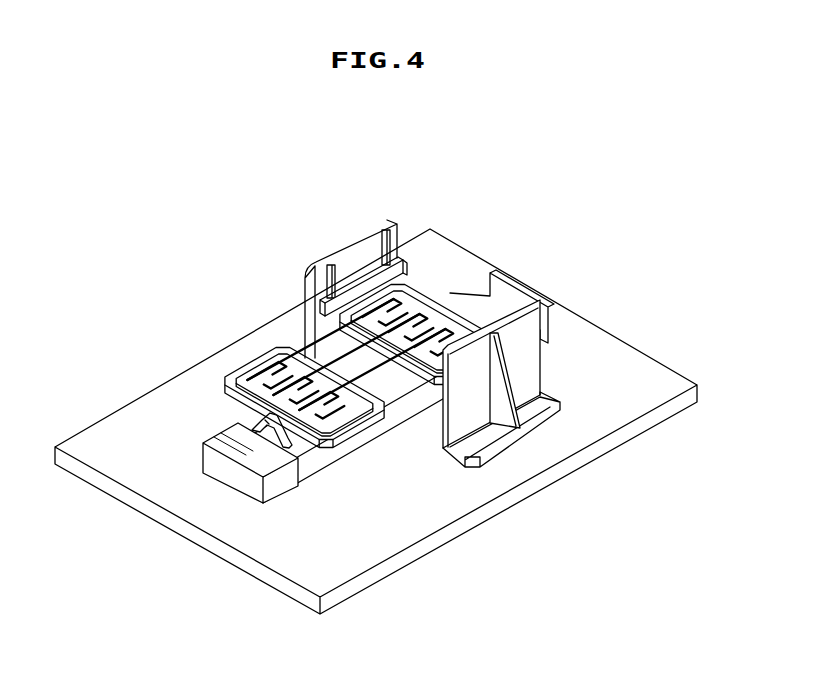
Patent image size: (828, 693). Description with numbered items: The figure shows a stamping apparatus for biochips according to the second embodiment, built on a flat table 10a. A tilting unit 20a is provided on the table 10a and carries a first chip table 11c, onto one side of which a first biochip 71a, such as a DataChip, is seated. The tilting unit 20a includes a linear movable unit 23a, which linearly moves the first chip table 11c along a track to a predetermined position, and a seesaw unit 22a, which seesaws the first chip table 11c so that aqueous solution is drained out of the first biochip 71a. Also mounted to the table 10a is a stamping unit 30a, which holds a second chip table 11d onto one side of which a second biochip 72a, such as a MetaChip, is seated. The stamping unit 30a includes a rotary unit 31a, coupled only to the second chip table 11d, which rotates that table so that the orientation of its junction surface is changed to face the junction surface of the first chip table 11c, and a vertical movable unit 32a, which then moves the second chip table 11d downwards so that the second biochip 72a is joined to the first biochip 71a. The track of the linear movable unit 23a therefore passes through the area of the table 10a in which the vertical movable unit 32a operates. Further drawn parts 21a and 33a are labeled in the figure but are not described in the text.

The table 10a is at (493, 525).
The tilting unit 20a is at (277, 416).
The hook 21a is at (260, 412).
The seesaw unit 22a is at (300, 445).
The linear movable unit 23a is at (282, 483).
The first chip table 11c is at (283, 358).
The second chip table 11d is at (419, 275).
The first biochip 71a is at (250, 378).
The second biochip 72a is at (418, 303).
The stamping unit 30a is at (419, 293).
The rotary unit 31a is at (362, 262).
The vertical movable unit 32a is at (307, 268).
The cross bar 33a is at (362, 278).